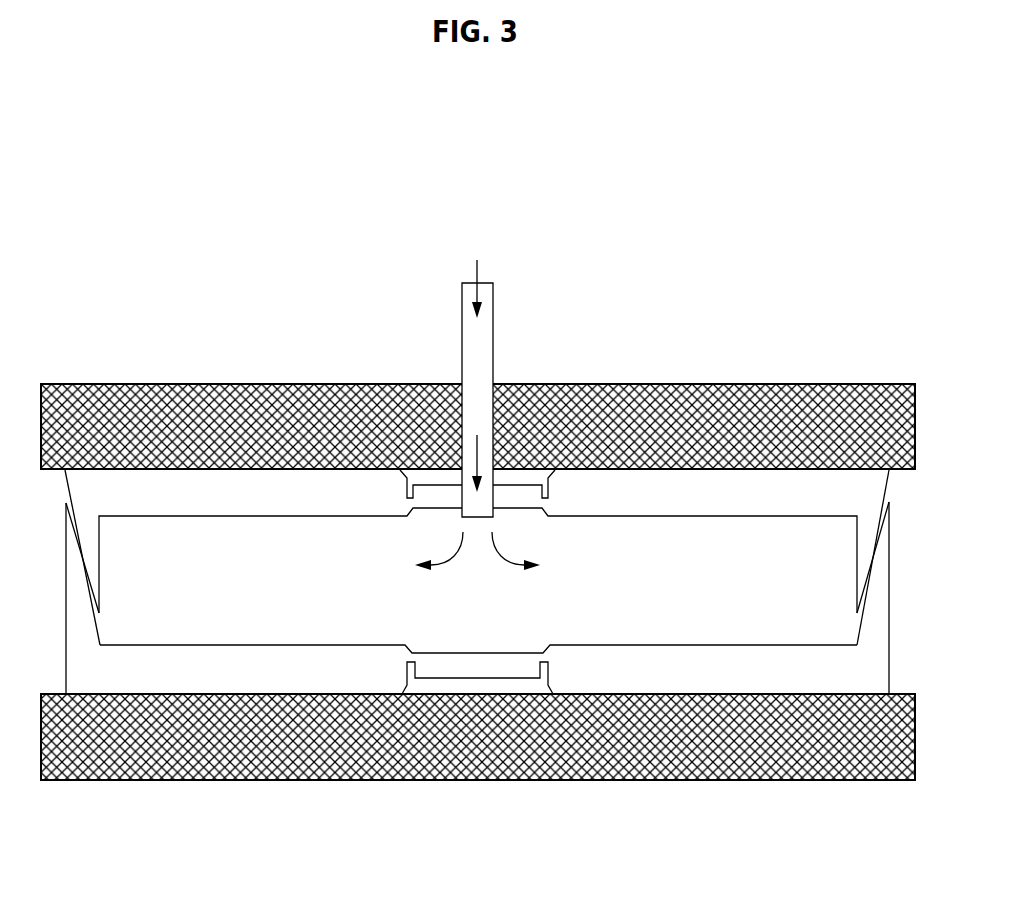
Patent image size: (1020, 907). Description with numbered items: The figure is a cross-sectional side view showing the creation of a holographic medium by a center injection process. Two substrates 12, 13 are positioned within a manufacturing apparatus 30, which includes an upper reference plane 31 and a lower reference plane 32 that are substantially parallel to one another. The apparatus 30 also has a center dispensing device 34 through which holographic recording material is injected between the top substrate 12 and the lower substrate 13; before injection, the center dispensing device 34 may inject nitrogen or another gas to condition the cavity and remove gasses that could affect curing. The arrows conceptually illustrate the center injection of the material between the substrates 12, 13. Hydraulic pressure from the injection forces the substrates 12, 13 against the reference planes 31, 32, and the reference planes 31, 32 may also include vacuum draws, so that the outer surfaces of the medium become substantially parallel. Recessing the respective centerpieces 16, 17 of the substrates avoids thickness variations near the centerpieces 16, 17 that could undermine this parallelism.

The top substrate 12 is at (280, 500).
The substrate 13 is at (676, 663).
The centerpiece 16 is at (430, 500).
The centerpiece 17 is at (463, 665).
The manufacturing apparatus 30 is at (642, 338).
The upper reference plane 31 is at (90, 392).
The lower reference plane 32 is at (97, 770).
The center dispensing device 34 is at (495, 345).